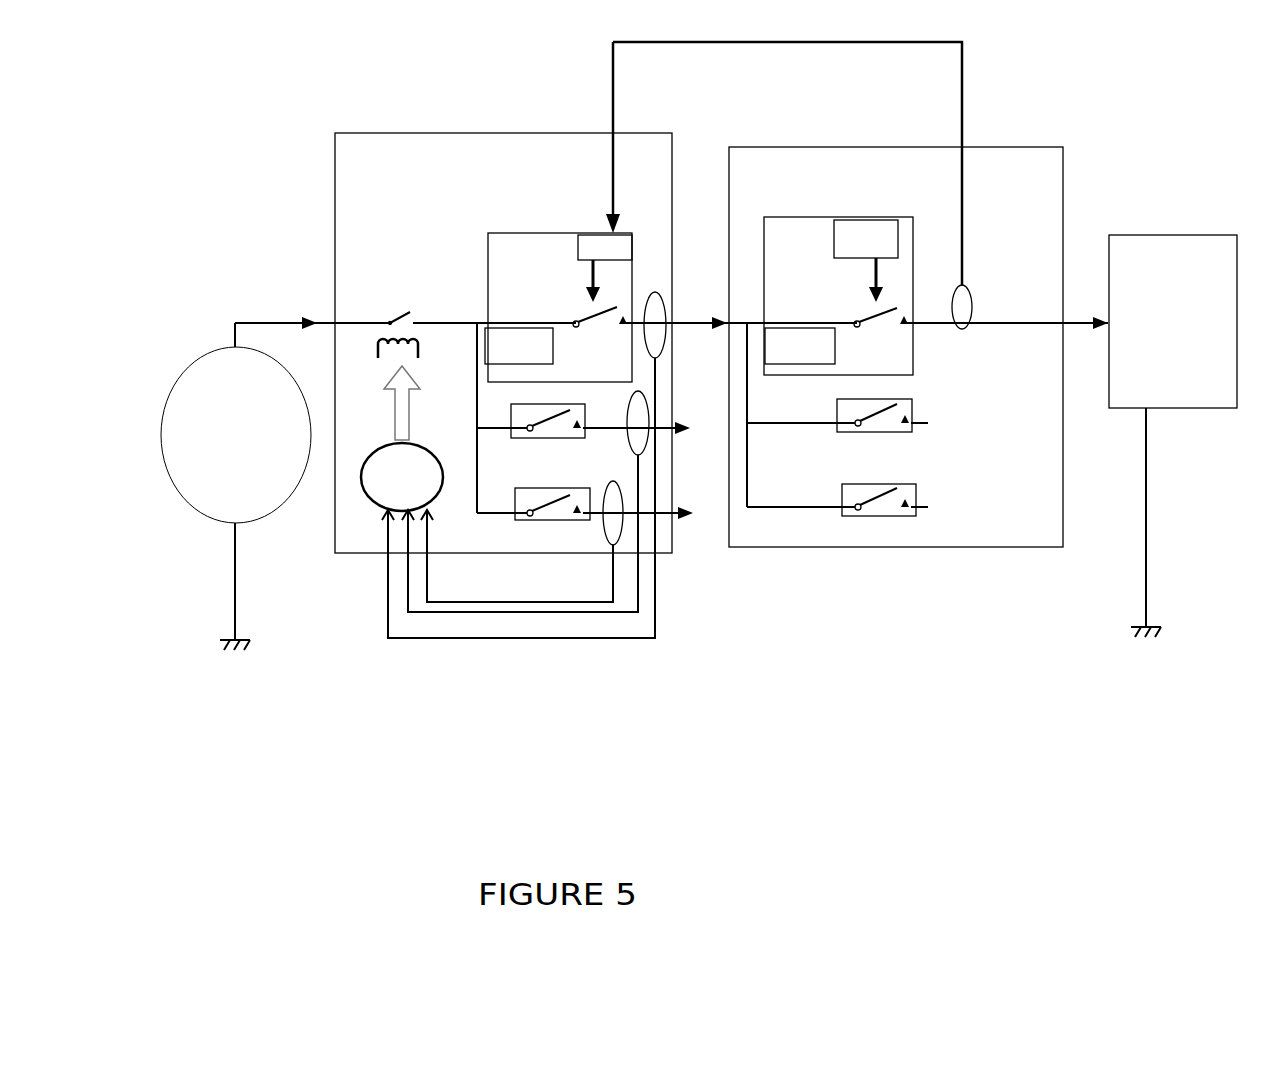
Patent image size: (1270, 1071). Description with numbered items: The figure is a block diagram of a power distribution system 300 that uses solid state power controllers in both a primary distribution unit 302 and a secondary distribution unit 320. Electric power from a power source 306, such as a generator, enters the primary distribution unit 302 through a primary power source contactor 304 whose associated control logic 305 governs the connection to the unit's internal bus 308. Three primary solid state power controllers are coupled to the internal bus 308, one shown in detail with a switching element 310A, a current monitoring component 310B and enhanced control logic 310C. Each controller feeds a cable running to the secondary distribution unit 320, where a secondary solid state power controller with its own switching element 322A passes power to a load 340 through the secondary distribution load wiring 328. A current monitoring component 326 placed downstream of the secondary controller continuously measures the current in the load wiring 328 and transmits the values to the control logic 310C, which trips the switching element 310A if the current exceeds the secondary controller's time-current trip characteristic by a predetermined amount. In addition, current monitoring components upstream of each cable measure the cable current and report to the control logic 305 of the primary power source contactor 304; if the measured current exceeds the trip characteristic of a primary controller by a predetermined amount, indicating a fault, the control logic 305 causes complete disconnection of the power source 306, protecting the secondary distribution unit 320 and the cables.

The power distribution system 300 is at (685, 737).
The primary distribution unit 302 is at (503, 343).
The primary power source contactor 304 is at (398, 306).
The control logic 305 is at (508, 498).
The power source 306 is at (236, 486).
The internal bus 308 is at (427, 401).
The switching element 310A is at (599, 331).
The current monitoring component 310B is at (519, 346).
The control logic 310C is at (770, 172).
The secondary distribution unit 320 is at (896, 347).
The switching element 322A is at (879, 332).
The current monitoring component 326 is at (965, 318).
The secondary distribution load wiring 328 is at (1085, 311).
The load 340 is at (1173, 436).